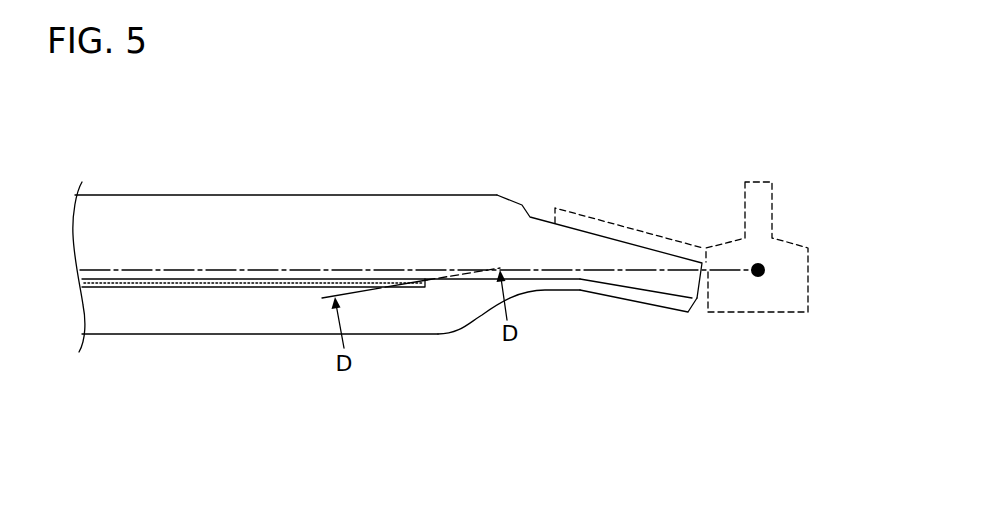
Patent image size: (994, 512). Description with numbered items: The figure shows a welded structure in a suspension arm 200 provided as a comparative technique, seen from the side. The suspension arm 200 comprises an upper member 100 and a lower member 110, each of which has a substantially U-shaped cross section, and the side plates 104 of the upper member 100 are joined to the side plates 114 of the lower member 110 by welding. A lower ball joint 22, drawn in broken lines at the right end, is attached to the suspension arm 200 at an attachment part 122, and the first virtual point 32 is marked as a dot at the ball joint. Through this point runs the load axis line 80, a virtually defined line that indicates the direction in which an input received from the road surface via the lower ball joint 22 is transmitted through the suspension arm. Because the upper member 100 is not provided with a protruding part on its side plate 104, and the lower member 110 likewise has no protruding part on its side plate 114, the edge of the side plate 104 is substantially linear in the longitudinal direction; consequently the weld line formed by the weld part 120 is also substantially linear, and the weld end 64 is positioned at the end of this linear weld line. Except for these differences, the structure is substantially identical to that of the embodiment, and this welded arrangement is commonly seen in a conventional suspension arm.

The lower ball joint 22 is at (793, 313).
The first virtual point 32 is at (758, 278).
The weld end 64 is at (442, 305).
The load axis line 80 is at (120, 270).
The upper member 100 is at (191, 180).
The side plate 104 is at (250, 196).
The lower member 110 is at (191, 360).
The side plate 114 is at (141, 335).
The weld part 120 is at (256, 288).
The attachment part 122 is at (663, 286).
The suspension arm 200 is at (383, 463).